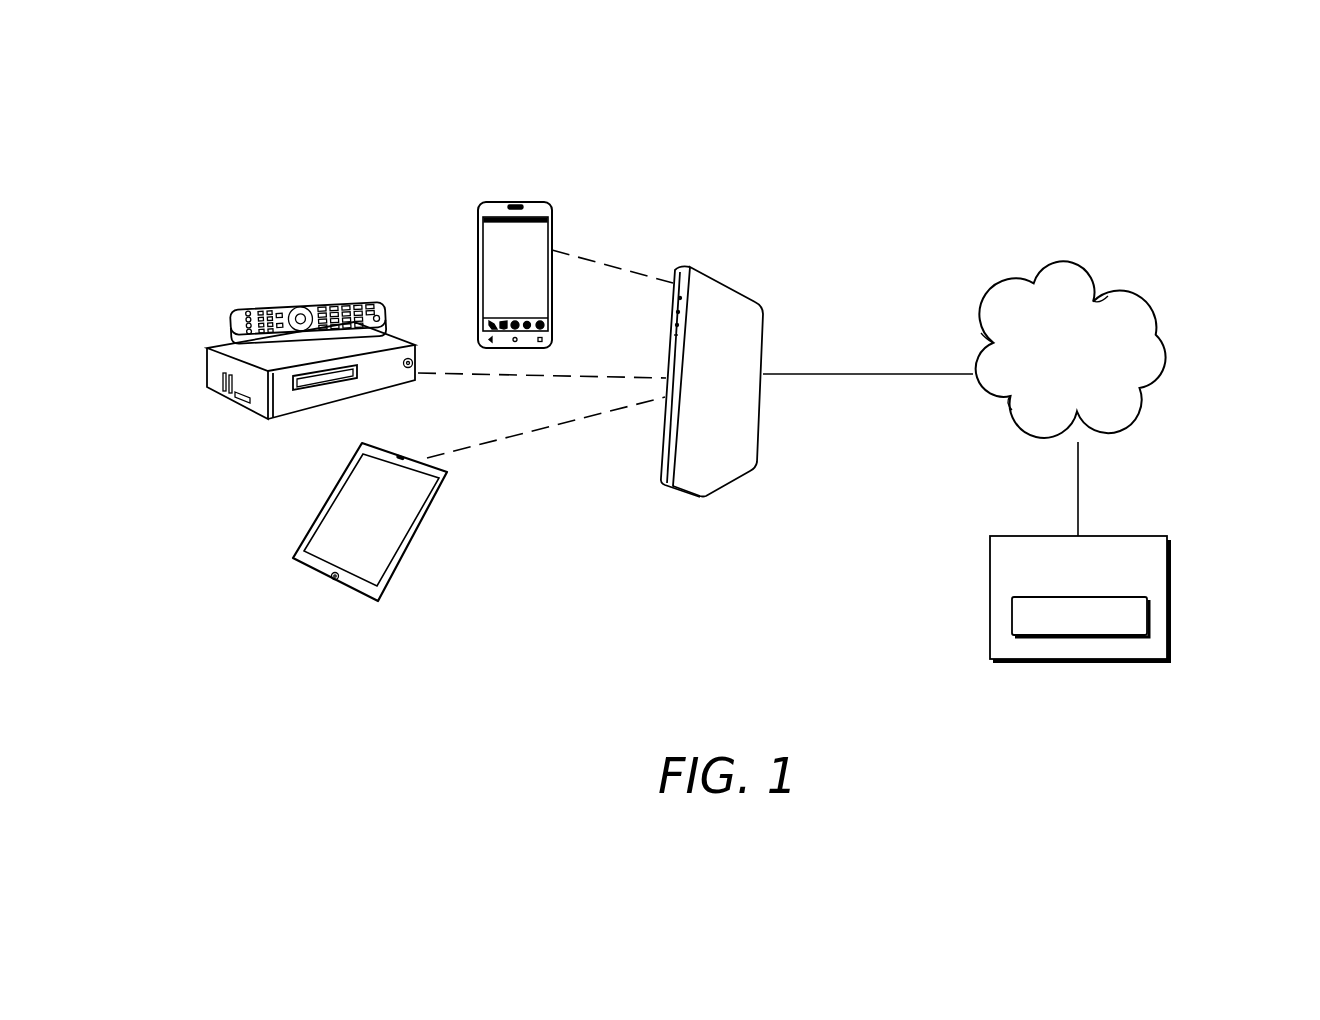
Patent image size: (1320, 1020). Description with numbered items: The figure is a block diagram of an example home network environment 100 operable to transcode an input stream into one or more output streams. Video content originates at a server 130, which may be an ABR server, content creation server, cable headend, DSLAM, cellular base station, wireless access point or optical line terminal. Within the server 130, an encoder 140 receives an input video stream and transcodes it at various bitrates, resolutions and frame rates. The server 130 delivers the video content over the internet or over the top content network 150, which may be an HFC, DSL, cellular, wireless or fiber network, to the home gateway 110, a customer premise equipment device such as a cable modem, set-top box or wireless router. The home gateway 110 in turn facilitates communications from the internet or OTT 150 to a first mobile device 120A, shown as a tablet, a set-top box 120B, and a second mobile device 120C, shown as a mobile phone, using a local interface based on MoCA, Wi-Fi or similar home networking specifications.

The home network environment 100 is at (331, 147).
The home gateway 110 is at (712, 275).
The first mobile device 120A is at (390, 583).
The set-top box 120B is at (240, 312).
The second mobile device 120C is at (508, 202).
The server 130 is at (1137, 536).
The encoder 140 is at (1150, 617).
The internet or over the top content (OTT) 150 is at (1118, 272).